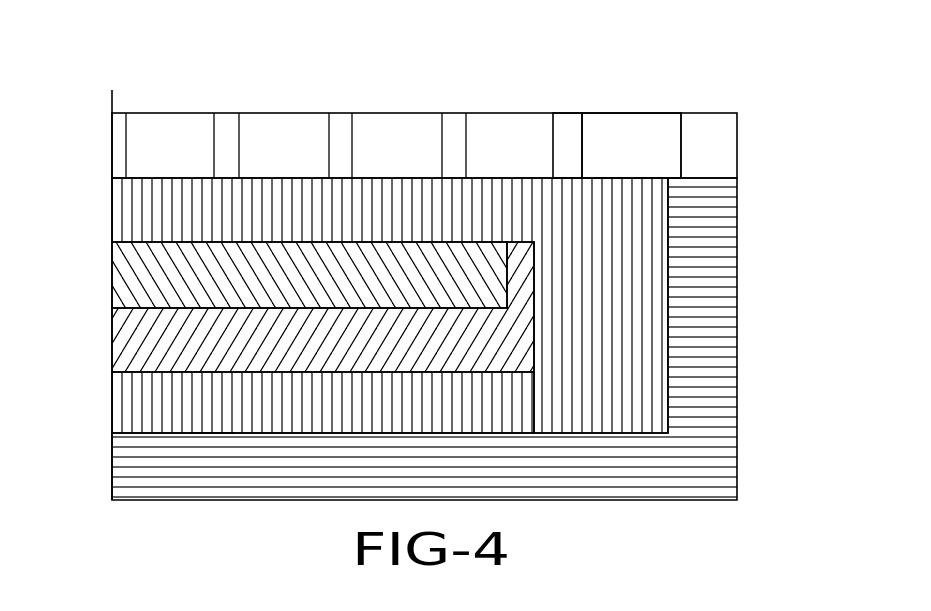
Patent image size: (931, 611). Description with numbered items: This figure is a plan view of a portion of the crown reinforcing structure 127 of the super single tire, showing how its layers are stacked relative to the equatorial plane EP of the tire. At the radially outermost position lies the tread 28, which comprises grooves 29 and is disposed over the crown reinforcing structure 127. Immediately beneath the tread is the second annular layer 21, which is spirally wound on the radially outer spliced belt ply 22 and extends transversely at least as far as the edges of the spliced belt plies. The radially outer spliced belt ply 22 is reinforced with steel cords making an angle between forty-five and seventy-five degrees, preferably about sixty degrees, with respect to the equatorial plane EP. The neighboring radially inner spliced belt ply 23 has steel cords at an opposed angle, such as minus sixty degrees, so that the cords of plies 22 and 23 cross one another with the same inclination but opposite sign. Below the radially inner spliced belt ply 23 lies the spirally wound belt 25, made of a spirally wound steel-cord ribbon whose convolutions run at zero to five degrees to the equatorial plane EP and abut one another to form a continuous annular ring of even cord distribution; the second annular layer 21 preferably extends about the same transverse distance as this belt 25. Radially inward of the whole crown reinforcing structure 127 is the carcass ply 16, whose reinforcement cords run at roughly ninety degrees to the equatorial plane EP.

The equatorial plane EP is at (107, 282).
The second annular layer 21 is at (273, 218).
The radially outer spliced belt ply 22 is at (150, 277).
The radially inner spliced belt ply 23 is at (150, 350).
The spirally wound belt 25 is at (150, 413).
The tread 28 is at (637, 135).
The grooves 29 is at (563, 143).
The carcass ply 16 is at (710, 338).
The crown reinforcing structure 127 is at (205, 435).